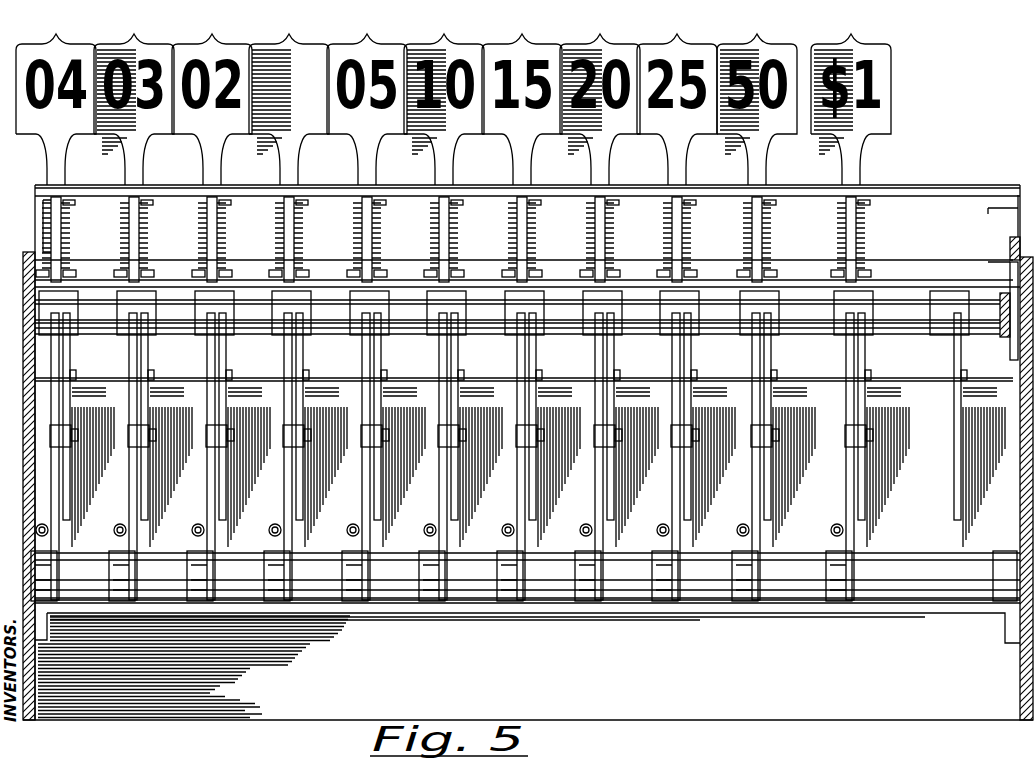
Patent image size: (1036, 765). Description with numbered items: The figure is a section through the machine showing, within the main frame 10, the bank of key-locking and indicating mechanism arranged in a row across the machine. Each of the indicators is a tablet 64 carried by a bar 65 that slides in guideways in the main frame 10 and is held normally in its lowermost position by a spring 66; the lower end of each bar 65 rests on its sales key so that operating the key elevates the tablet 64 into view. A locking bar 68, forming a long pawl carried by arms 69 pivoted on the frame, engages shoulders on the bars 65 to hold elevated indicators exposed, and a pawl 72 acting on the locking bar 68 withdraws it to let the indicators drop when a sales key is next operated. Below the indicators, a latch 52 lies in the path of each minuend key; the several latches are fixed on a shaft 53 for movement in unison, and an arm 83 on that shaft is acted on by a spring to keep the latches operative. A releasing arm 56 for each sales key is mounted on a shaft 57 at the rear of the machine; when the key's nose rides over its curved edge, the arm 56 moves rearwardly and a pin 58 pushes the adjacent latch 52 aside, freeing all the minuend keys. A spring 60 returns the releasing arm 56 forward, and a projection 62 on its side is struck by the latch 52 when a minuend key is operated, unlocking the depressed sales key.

The main frame 10 is at (36, 675).
The latch 52 is at (458, 485).
The shaft 53 is at (643, 318).
The releasing arm 56 is at (445, 493).
The shaft 57 is at (238, 563).
The pin 58 is at (543, 378).
The spring 60 is at (351, 525).
The projection 62 is at (381, 443).
The tablet 64 is at (267, 50).
The bar 65 is at (368, 228).
The spring 66 is at (284, 228).
The locking bar 68 is at (492, 280).
The arm 69 is at (1010, 344).
The pawl 72 is at (1010, 252).
The arm 83 is at (1000, 292).